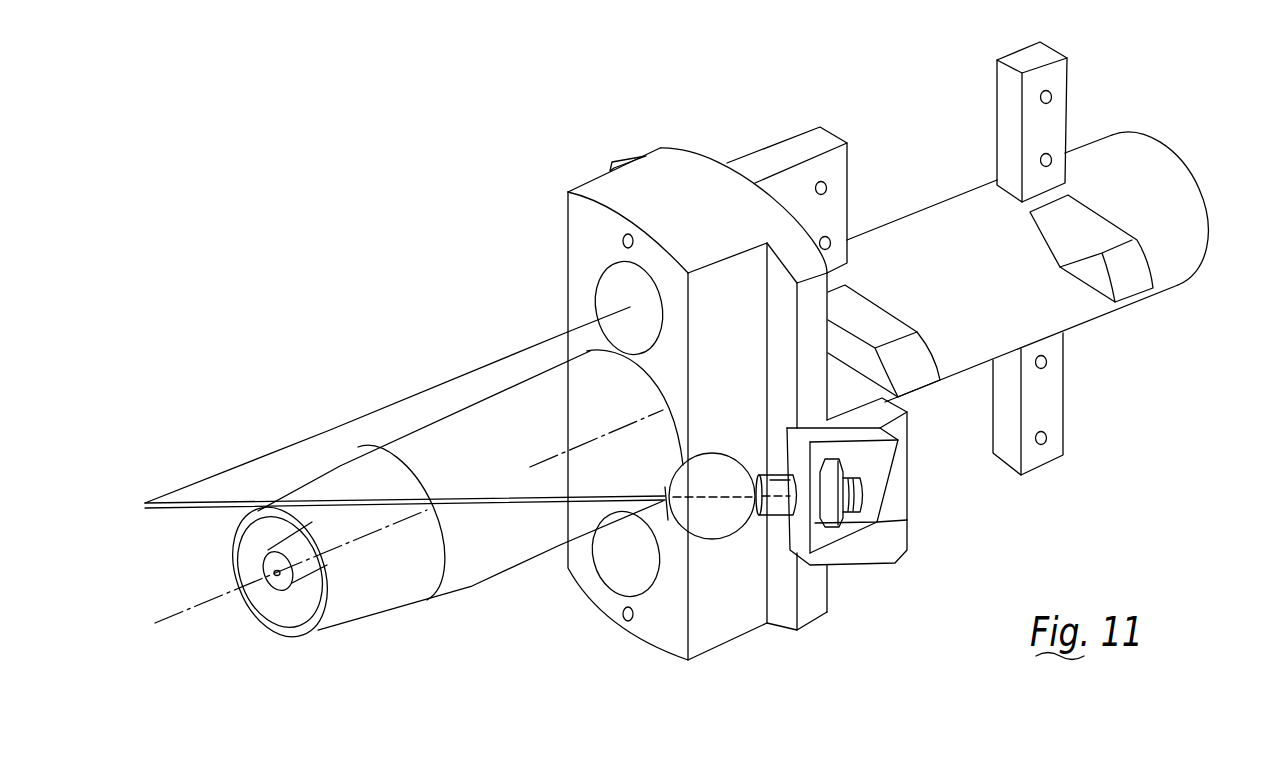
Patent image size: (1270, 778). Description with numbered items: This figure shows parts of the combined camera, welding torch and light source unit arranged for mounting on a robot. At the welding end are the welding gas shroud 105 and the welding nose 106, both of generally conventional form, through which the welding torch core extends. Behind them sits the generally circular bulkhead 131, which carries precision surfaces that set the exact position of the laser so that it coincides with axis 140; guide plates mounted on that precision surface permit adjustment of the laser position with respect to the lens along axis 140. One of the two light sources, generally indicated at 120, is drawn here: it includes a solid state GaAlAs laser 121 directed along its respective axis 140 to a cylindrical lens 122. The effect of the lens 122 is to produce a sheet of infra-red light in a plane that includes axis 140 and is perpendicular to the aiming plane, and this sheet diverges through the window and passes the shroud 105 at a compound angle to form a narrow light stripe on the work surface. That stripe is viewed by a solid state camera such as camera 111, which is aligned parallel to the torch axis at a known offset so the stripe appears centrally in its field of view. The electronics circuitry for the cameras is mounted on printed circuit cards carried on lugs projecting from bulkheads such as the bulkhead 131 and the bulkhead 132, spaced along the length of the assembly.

The bulkhead 131 is at (688, 177).
The solid state camera 111 is at (617, 298).
The cylindrical lens 122 is at (712, 467).
The solid state GaAlAs laser 121 is at (783, 514).
The light source 120 is at (783, 562).
The bulkhead 132 is at (1050, 112).
The axis 140 is at (497, 497).
The welding gas shroud 105 is at (388, 595).
The welding nose 106 is at (303, 583).